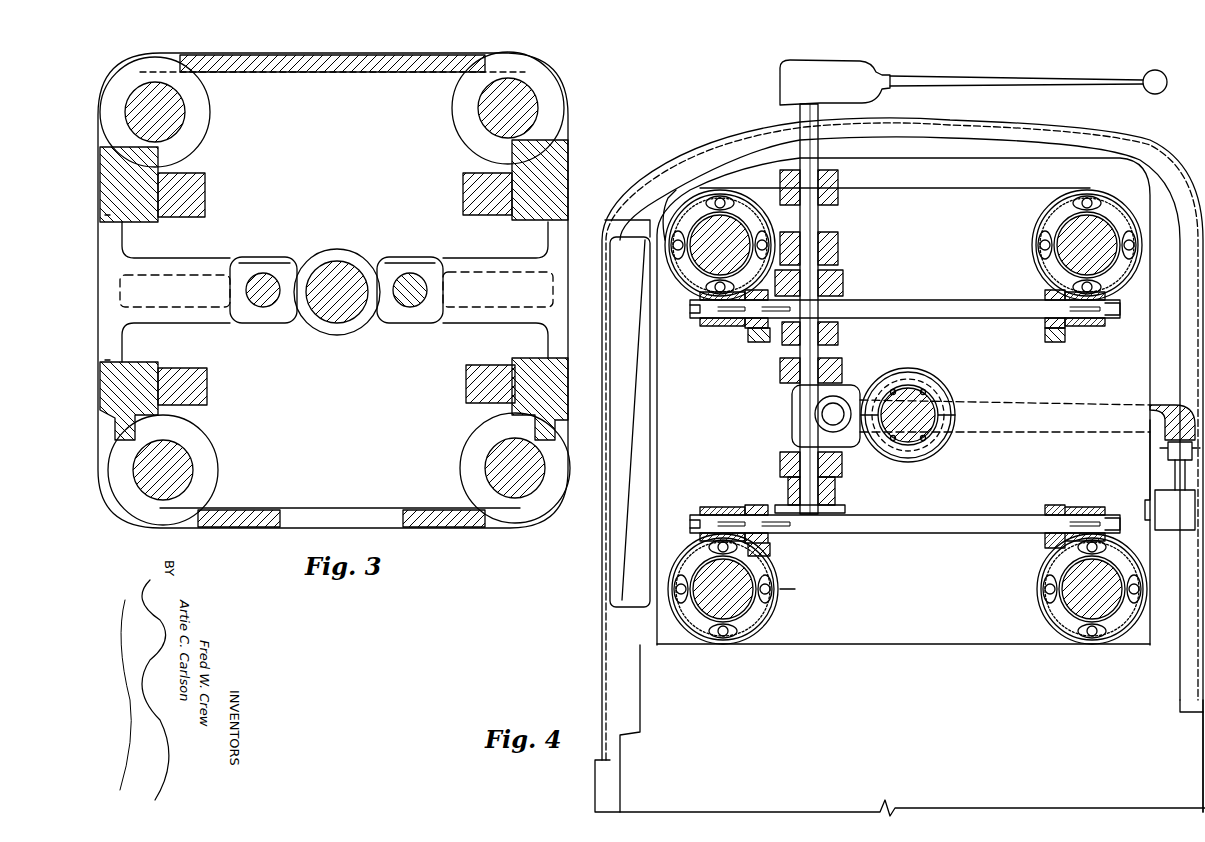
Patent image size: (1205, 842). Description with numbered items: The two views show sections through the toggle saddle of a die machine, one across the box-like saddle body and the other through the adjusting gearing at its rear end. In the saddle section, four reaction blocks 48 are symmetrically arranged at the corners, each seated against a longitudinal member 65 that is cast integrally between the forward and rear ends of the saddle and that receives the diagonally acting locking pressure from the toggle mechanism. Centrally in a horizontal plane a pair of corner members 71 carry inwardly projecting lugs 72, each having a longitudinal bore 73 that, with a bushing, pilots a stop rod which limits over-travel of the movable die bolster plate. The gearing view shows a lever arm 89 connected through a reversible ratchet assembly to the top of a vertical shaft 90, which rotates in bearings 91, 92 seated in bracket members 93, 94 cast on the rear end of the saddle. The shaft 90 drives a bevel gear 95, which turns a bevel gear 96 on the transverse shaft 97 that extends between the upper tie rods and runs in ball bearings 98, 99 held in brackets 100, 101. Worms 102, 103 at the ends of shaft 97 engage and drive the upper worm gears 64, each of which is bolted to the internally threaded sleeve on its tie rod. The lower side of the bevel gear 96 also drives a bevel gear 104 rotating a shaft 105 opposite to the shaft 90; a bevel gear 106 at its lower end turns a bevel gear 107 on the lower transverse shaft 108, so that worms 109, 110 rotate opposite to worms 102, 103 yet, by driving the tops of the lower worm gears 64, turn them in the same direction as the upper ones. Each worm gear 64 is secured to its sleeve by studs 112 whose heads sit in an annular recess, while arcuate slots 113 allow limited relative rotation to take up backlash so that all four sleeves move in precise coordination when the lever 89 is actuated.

In FIG. 3, the reaction block 48 is at (207, 388).
In FIG. 3, the longitudinal member 65 is at (150, 372).
In FIG. 3, the corner member 71 is at (178, 263).
In FIG. 3, the lug 72 is at (245, 312).
In FIG. 3, the longitudinal bore 73 is at (265, 285).
In FIG. 4, the lever arm 89 is at (980, 64).
In FIG. 4, the vertical shaft 90 is at (798, 118).
In FIG. 4, the bearing 91 is at (838, 185).
In FIG. 4, the bearing 92 is at (840, 242).
In FIG. 4, the bracket member 93 is at (838, 200).
In FIG. 4, the bracket member 94 is at (840, 260).
In FIG. 4, the bevel gear 95 is at (843, 292).
In FIG. 4, the bevel gear 96 is at (783, 360).
In FIG. 4, the shaft 97 is at (920, 320).
In FIG. 4, the ball bearing 98 is at (752, 330).
In FIG. 4, the ball bearing 99 is at (1045, 325).
In FIG. 4, the bracket 100 is at (760, 344).
In FIG. 4, the bracket 101 is at (1050, 344).
In FIG. 4, the worm 102 is at (712, 328).
In FIG. 4, the worm 103 is at (1085, 328).
In FIG. 4, the bevel gear 104 is at (838, 338).
In FIG. 4, the shaft 105 is at (805, 408).
In FIG. 4, the bevel gear 106 is at (845, 508).
In FIG. 4, the bevel gear 107 is at (770, 550).
In FIG. 4, the shaft 108 is at (935, 515).
In FIG. 4, the worm 109 is at (720, 505).
In FIG. 4, the worm 110 is at (1080, 505).
In FIG. 4, the stud 112 is at (700, 188).
In FIG. 4, the arcuate slot 113 is at (778, 600).
In FIG. 4, the worm gear 64 is at (688, 290).